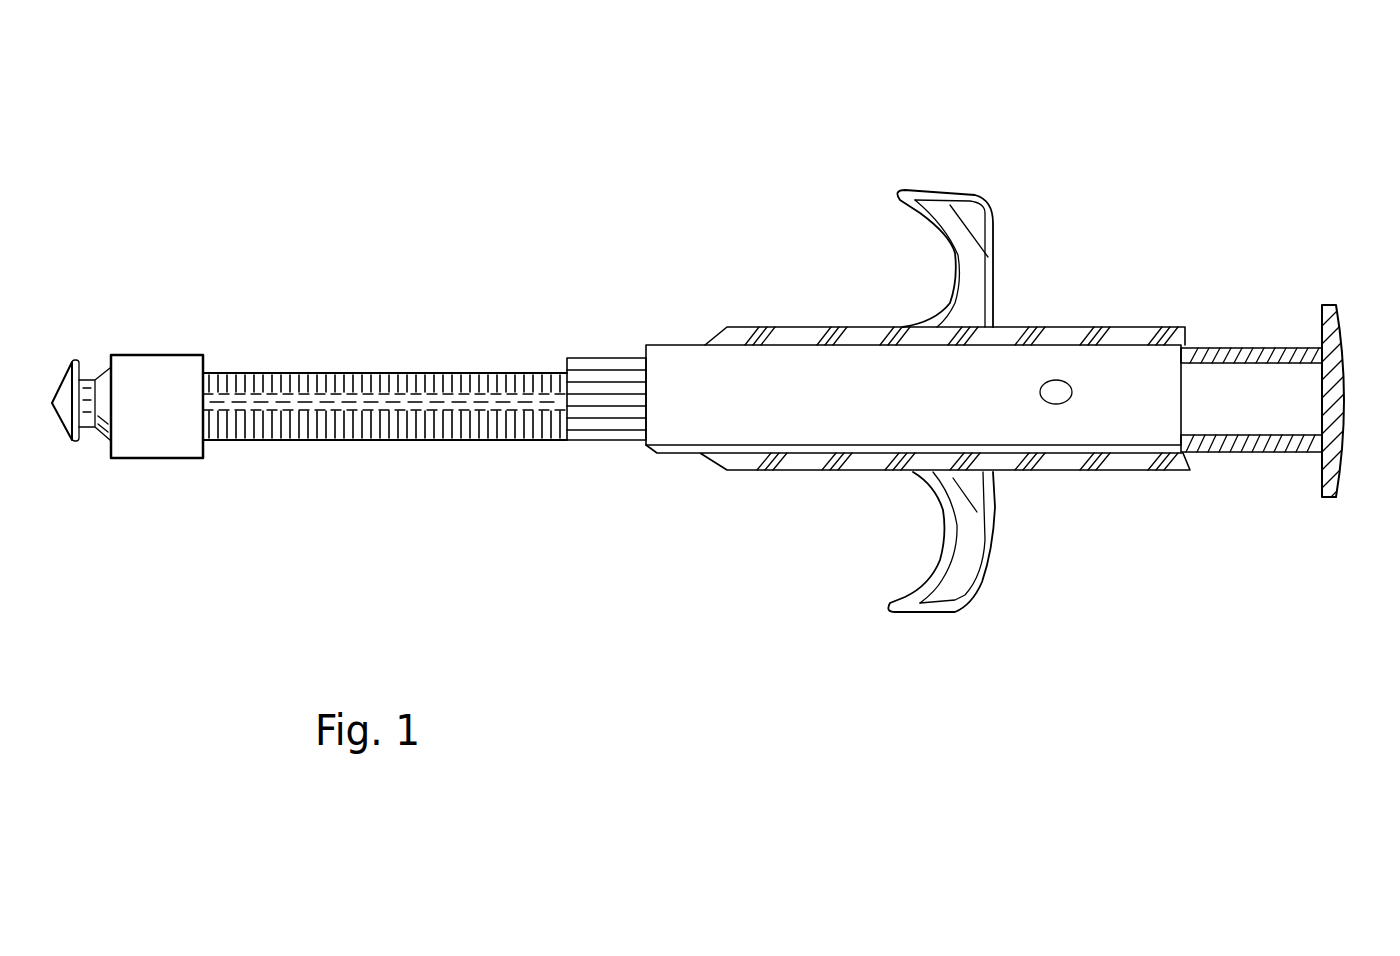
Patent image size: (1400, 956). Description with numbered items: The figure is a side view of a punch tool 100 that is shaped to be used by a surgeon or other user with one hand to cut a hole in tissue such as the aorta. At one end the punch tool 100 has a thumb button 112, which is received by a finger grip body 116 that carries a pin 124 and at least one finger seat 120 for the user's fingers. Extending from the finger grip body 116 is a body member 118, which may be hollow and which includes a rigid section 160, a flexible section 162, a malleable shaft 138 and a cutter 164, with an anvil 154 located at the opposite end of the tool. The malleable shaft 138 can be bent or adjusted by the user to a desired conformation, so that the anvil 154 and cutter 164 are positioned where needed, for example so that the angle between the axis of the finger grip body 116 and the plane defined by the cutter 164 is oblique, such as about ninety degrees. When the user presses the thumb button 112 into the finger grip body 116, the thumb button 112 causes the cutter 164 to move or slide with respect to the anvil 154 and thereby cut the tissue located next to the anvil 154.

The punch tool 100 is at (1035, 70).
The thumb button 112 is at (1352, 292).
The finger grip body 116 is at (1048, 216).
The body member 118 is at (436, 292).
The finger seat 120 is at (963, 207).
The pin 124 is at (1055, 391).
The malleable shaft 138 is at (381, 398).
The anvil 154 is at (95, 327).
The rigid section 160 is at (598, 358).
The flexible section 162 is at (502, 327).
The cutter 164 is at (183, 327).